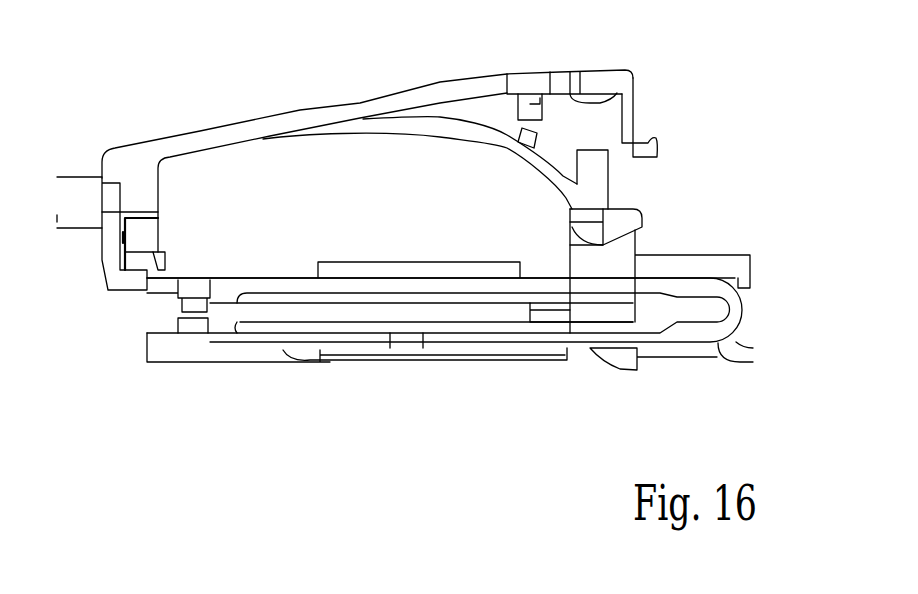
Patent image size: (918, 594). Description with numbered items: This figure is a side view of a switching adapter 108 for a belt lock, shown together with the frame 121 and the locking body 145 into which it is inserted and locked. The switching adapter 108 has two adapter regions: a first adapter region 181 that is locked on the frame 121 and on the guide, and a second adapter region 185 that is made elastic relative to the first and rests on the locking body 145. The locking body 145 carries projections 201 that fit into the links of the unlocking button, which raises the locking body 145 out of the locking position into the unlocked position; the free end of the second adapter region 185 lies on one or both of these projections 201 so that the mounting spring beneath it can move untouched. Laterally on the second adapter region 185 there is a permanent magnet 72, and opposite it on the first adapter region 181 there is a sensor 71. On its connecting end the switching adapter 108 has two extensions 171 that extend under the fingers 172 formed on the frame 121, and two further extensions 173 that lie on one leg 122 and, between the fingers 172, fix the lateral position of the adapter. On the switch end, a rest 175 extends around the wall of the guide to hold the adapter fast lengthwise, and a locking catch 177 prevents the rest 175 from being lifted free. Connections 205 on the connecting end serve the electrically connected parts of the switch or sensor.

The switching adapter 108 is at (327, 104).
The connections 205 is at (72, 177).
The extensions 171 is at (122, 290).
The fingers 172 is at (145, 262).
The extensions 173 is at (165, 257).
The first adapter region 181 is at (480, 85).
The sensor 71 is at (531, 104).
The rest 175 is at (630, 84).
The locking catch 177 is at (655, 140).
The second adapter region 185 is at (545, 165).
The permanent magnet 72 is at (531, 133).
The projections 201 is at (642, 210).
The locking body 145 is at (614, 259).
The leg 122 is at (240, 287).
The frame 121 is at (670, 338).